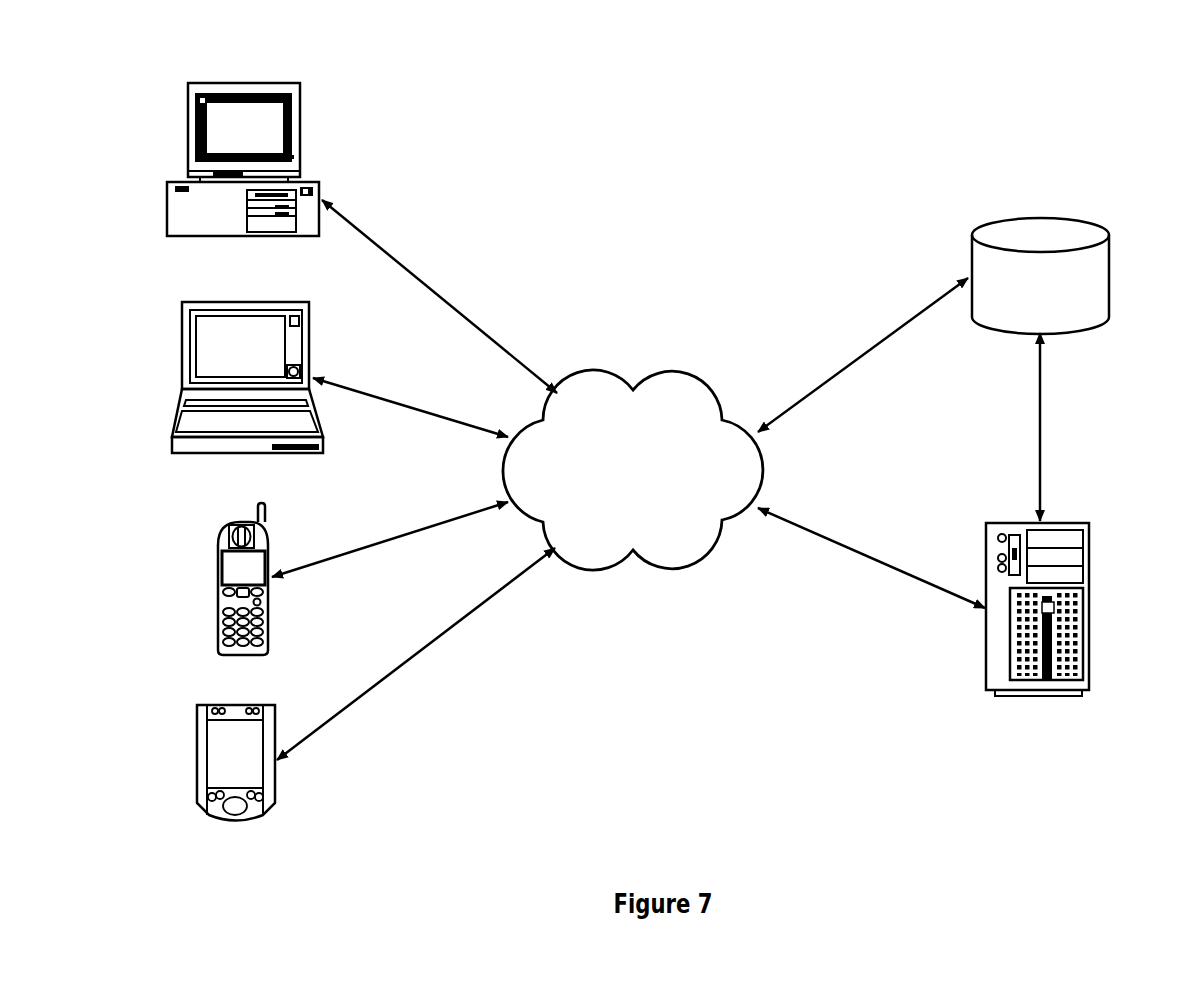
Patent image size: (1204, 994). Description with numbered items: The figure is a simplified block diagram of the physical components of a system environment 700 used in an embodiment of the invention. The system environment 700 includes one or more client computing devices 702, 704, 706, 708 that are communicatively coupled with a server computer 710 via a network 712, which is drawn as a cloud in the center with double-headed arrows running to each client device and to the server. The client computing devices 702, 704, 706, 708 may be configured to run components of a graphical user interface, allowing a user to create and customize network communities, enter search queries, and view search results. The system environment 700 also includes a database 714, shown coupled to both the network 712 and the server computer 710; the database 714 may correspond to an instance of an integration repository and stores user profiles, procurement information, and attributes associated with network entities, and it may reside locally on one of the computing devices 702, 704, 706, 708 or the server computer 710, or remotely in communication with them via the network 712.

The system environment 700 is at (1152, 126).
The client computing device 702 is at (243, 83).
The client computing device 704 is at (243, 302).
The client computing device 706 is at (240, 522).
The client computing device 708 is at (238, 705).
The server computer 710 is at (1022, 523).
The network 712 is at (633, 470).
The database 714 is at (1080, 220).